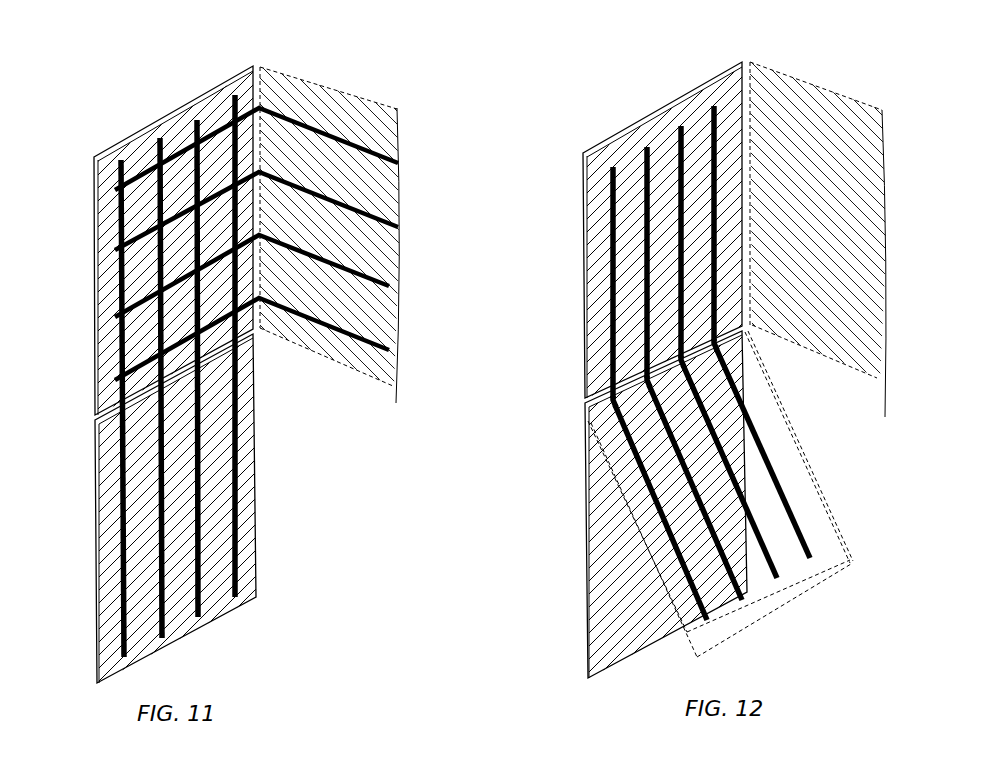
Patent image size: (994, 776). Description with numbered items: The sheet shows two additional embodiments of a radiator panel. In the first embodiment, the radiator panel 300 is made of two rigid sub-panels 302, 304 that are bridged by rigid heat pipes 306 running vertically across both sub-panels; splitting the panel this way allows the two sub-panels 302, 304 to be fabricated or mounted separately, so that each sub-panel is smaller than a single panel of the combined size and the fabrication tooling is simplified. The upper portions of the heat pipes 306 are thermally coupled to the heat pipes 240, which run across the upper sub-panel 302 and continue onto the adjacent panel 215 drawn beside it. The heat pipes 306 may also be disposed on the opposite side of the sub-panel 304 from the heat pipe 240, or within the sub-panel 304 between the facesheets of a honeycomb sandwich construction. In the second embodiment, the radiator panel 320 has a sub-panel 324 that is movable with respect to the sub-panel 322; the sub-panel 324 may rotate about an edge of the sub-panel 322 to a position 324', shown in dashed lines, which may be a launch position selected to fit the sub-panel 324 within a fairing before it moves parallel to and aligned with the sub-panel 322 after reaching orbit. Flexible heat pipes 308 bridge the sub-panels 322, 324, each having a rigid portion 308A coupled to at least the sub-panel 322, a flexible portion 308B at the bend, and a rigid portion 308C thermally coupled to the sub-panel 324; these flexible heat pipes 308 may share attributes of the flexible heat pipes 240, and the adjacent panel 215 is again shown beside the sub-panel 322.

In FIG. 11, the radiator panel 300 is at (175, 54).
In FIG. 11, the rigid sub-panel 302 is at (107, 285).
In FIG. 11, the rigid sub-panel 304 is at (113, 539).
In FIG. 11, the rigid heat pipes 306 is at (238, 462).
In FIG. 11, the heat pipes 240 is at (295, 118).
In FIG. 11, the adjacent side panel 215 is at (388, 54).
In FIG. 12, the adjacent side panel 215 is at (818, 52).
In FIG. 12, the radiator panel 320 is at (652, 50).
In FIG. 12, the sub-panel 322 is at (615, 145).
In FIG. 12, the sub-panel 324 is at (636, 511).
In FIG. 12, the position of sub-panel 324' is at (750, 494).
In FIG. 12, the flexible heat pipes 308 is at (614, 363).
In FIG. 12, the rigid portion 308A is at (610, 267).
In FIG. 12, the flexible portion 308B is at (610, 407).
In FIG. 12, the rigid portion 308C is at (655, 484).